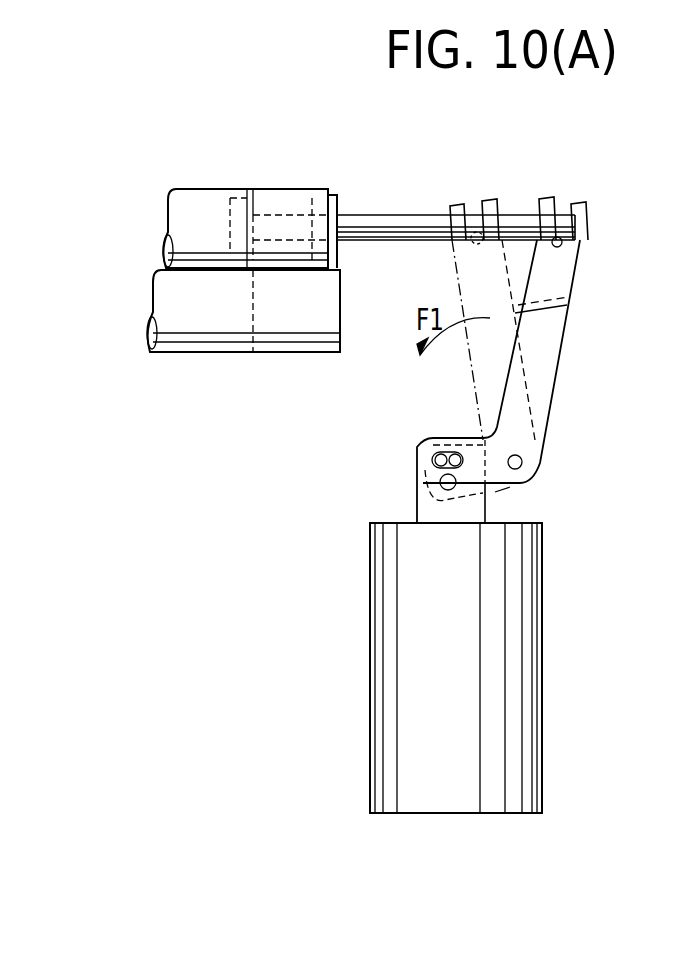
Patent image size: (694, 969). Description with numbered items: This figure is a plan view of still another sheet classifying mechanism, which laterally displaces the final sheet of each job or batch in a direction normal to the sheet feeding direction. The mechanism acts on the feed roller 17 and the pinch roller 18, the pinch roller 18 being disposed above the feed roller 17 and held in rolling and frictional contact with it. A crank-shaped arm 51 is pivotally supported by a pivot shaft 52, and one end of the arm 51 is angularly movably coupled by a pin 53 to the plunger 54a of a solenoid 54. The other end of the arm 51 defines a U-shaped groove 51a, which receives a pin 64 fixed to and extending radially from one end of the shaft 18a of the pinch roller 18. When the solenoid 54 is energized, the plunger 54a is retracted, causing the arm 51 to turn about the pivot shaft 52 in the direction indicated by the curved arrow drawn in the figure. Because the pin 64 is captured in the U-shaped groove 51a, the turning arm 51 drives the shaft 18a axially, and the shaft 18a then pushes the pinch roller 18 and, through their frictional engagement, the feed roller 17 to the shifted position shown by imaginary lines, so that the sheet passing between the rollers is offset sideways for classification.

The feed roller 17 is at (275, 335).
The pinch roller 18 is at (270, 200).
The shaft 18a is at (418, 222).
The crank-shaped arm 51 is at (523, 366).
The U-shaped groove 51a is at (573, 208).
The pivot shaft 52 is at (522, 463).
The pin 53 is at (447, 458).
The solenoid 54 is at (545, 660).
The plunger 54a is at (420, 495).
The pin 64 is at (590, 228).